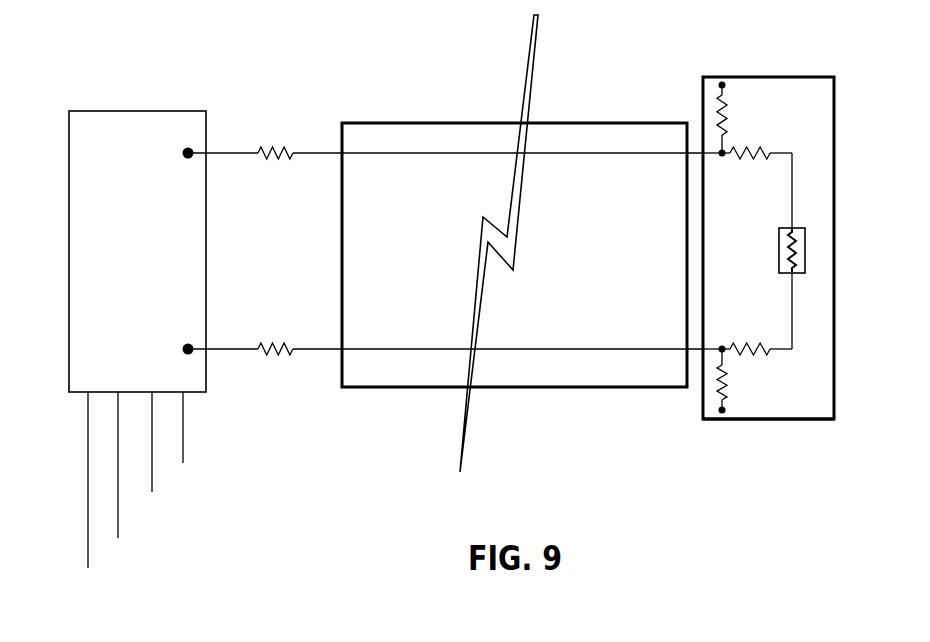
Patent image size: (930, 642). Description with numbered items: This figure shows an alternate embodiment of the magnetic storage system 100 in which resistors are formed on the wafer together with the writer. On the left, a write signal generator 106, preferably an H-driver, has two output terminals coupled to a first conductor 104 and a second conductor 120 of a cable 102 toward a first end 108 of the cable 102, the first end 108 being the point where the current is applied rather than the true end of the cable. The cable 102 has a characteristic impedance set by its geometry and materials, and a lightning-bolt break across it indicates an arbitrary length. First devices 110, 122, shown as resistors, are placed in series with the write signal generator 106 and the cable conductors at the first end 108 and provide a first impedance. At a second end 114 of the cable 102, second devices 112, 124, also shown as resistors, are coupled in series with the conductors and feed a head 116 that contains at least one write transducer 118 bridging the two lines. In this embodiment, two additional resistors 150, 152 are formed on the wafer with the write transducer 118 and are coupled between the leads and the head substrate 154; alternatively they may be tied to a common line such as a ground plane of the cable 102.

The magnetic storage system 100 is at (168, 312).
The cable 102 is at (460, 121).
The first conductor 104 is at (562, 152).
The write signal generator 106 is at (92, 111).
The first end of the cable 108 is at (522, 241).
The first device 110 is at (272, 143).
The second device 112 is at (748, 148).
The second end of the cable 114 is at (767, 239).
The head 116 is at (836, 153).
The write transducer 118 is at (807, 250).
The second conductor 120 is at (565, 350).
The first device 122 is at (268, 355).
The second device 124 is at (755, 355).
The resistor 150 is at (730, 88).
The resistor 152 is at (728, 400).
The head substrate 154 is at (796, 420).